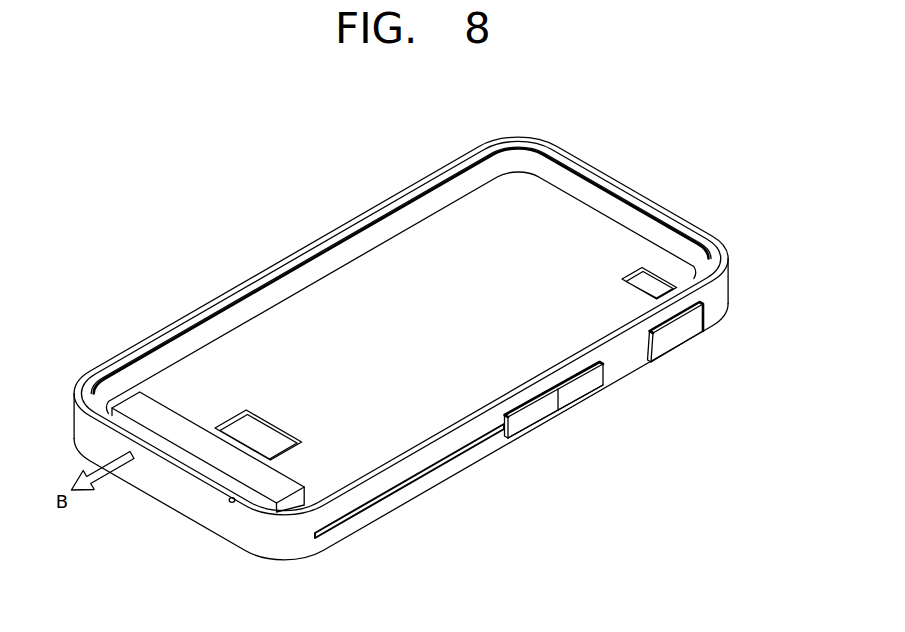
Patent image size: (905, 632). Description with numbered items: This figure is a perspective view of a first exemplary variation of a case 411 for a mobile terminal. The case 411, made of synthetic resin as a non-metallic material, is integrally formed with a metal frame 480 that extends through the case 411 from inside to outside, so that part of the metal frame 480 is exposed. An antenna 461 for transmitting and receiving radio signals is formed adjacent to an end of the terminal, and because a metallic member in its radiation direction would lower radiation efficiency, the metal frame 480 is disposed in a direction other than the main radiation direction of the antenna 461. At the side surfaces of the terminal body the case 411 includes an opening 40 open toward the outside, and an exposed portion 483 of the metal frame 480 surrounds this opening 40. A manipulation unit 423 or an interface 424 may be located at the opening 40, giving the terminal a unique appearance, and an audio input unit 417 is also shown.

The case 411 is at (723, 283).
The audio input unit 417 is at (230, 502).
The manipulation unit 423 is at (537, 417).
The interface 424 is at (685, 335).
The opening 40 is at (510, 444).
The antenna 461 is at (220, 455).
The metal frame 480 is at (372, 507).
The exposed portion 483 is at (705, 315).